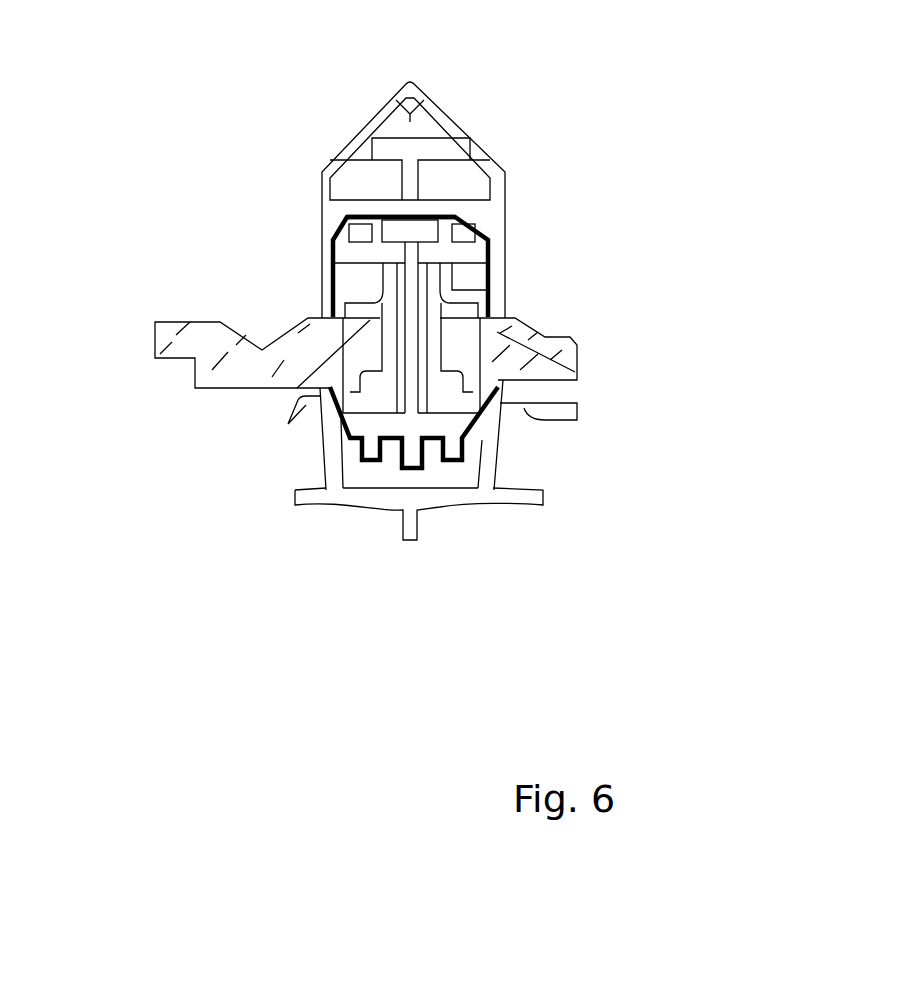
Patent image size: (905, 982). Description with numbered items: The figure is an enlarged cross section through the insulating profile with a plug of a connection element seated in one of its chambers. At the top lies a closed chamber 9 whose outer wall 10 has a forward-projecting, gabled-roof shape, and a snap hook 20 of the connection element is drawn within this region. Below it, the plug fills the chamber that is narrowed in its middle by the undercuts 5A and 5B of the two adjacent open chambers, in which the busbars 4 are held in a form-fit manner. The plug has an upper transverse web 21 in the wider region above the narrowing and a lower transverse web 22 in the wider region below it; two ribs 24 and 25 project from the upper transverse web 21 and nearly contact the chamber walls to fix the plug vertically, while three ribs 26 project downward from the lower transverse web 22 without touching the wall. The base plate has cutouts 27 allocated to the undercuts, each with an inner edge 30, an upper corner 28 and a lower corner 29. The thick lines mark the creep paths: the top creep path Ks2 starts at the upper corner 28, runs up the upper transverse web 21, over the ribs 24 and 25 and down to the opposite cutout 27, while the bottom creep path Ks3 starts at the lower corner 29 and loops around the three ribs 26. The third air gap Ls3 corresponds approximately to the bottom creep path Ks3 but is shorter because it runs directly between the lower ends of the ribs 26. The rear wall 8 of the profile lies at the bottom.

The outer wall 10 is at (375, 118).
The chamber 9 is at (357, 182).
The snap hook 20 is at (412, 180).
The top creep path Ks2 is at (418, 217).
The upper transverse web 21 is at (462, 252).
The top rib 24 is at (375, 228).
The bottom rib 25 is at (375, 277).
The upper corner 28 is at (478, 333).
The cutout 27 is at (401, 332).
The undercut 5B is at (352, 333).
The undercut 5A is at (440, 332).
The busbar 4 is at (563, 347).
The inner edge 30 is at (500, 377).
The lower corner 29 is at (520, 395).
The lower transverse web 22 is at (372, 423).
The bottom creep path Ks3 is at (483, 438).
The rib 26 is at (413, 452).
The rear wall 8 is at (415, 500).
The third air gap Ls3 is at (430, 467).